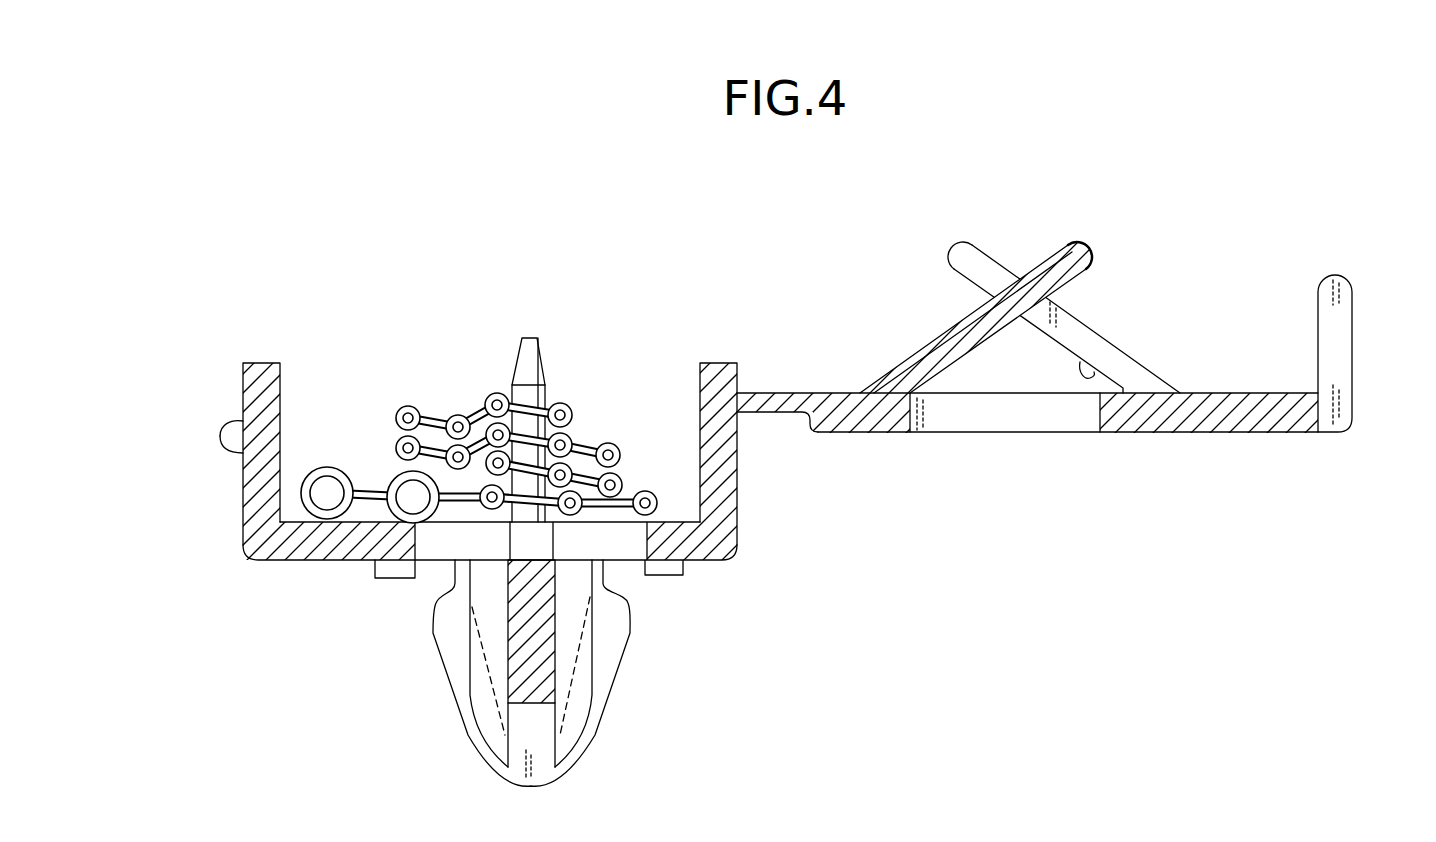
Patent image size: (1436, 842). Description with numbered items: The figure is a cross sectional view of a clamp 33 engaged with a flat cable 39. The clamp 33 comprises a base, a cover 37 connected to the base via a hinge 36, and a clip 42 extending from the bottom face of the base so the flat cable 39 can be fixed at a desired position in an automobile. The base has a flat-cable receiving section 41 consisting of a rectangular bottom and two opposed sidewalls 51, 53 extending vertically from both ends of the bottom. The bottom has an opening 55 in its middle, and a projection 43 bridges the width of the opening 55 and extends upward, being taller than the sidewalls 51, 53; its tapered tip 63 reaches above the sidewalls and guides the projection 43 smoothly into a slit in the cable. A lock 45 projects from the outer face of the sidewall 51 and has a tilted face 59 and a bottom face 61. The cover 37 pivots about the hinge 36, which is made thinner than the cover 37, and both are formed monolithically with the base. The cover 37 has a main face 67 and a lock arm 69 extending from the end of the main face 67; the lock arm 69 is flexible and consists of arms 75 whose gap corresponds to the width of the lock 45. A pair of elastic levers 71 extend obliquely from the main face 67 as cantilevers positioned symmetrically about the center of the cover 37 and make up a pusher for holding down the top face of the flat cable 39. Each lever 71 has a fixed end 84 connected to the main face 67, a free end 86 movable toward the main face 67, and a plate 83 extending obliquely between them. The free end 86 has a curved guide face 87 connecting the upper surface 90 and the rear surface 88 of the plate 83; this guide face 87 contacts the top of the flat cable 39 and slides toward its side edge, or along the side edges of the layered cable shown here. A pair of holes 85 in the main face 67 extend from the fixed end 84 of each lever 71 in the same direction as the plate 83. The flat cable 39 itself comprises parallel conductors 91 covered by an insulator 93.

The clamp 33 is at (718, 482).
The hinge 36 is at (775, 415).
The cover 37 is at (1138, 437).
The flat cable 39 is at (479, 387).
The flat-cable receiving section 41 is at (335, 561).
The clip 42 is at (600, 705).
The projection 43 is at (718, 510).
The lock 45 is at (185, 440).
The sidewall 51 is at (272, 398).
The sidewall 53 is at (718, 400).
The opening 55 is at (433, 545).
The tilted face 59 is at (232, 423).
The bottom face 61 is at (232, 454).
The tapered tip 63 is at (524, 346).
The main face 67 is at (718, 510).
The lock arm 69 is at (1377, 348).
The elastic lever 71 is at (1038, 269).
The arm 75 is at (1348, 397).
The plate 83 is at (987, 340).
The fixed end 84 is at (718, 510).
The hole 85 is at (943, 412).
The free end 86 is at (1060, 242).
The guide face 87 is at (1093, 249).
The rear surface 88 is at (1095, 325).
The upper surface 90 is at (1090, 366).
The conductor 91 is at (328, 488).
The insulator 93 is at (380, 478).